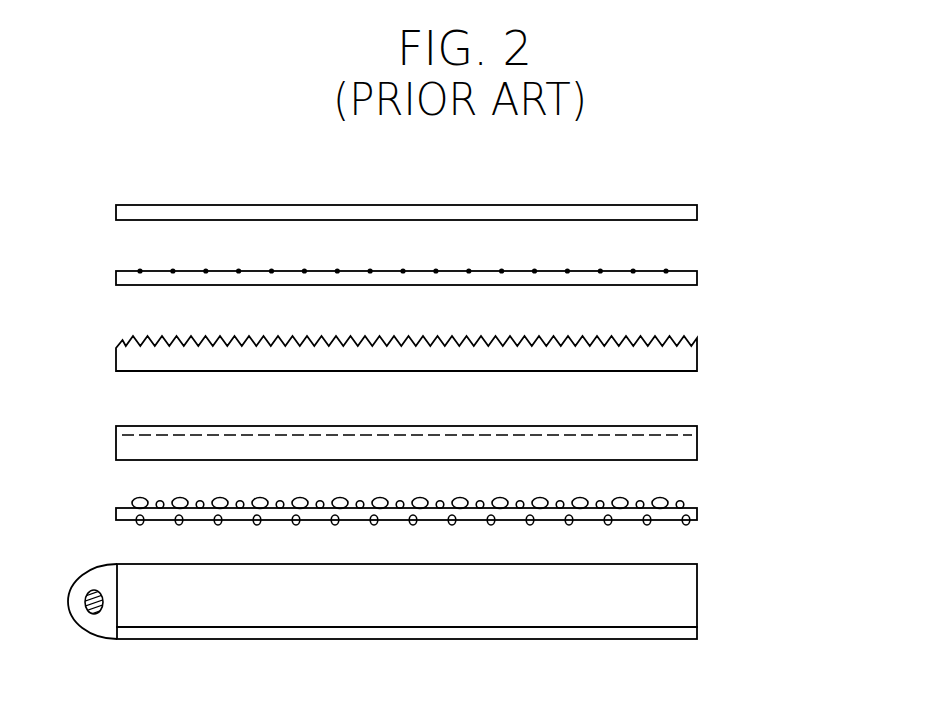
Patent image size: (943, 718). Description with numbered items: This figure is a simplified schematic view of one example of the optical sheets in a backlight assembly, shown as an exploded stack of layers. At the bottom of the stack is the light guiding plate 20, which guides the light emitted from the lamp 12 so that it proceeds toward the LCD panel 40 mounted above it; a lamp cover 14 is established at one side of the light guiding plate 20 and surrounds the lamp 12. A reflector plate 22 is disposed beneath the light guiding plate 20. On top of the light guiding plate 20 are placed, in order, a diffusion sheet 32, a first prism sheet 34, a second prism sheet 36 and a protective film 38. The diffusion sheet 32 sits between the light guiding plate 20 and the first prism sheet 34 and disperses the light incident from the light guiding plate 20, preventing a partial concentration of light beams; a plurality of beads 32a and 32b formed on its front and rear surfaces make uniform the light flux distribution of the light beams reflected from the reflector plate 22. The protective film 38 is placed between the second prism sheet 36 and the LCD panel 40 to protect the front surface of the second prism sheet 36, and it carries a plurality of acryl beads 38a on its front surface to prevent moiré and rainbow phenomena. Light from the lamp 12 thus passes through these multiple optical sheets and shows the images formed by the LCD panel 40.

The lamp 12 is at (90, 614).
The lamp cover 14 is at (80, 556).
The light guiding plate 20 is at (693, 586).
The reflector plate 22 is at (697, 632).
The diffusion sheet 32 is at (697, 514).
The beads 32a is at (667, 499).
The beads 32b is at (688, 524).
The first prism sheet 34 is at (697, 443).
The second prism sheet 36 is at (697, 360).
The protective film 38 is at (697, 278).
The acryl beads 38a is at (666, 271).
The LCD panel 40 is at (697, 212).